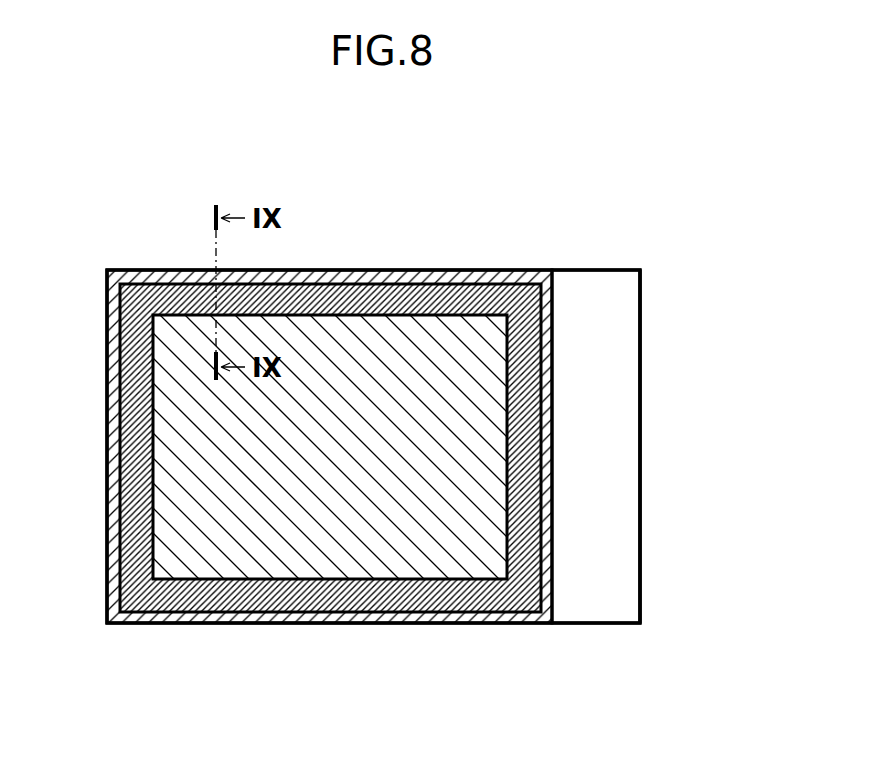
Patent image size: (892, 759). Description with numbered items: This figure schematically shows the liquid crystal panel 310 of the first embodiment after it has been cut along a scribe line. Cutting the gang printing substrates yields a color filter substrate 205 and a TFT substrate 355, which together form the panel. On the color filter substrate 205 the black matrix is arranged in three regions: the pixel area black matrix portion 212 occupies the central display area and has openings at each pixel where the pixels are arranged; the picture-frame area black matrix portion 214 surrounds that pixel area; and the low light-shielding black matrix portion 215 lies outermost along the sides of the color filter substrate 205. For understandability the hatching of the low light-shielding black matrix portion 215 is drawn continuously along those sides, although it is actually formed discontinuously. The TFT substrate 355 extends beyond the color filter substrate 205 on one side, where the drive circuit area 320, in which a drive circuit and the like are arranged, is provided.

The liquid crystal panel 310 is at (457, 152).
The low light-shielding black matrix portion 215 is at (195, 623).
The picture-frame area black matrix portion 214 is at (302, 597).
The pixel area black matrix portion 212 is at (435, 555).
The drive circuit area 320 is at (612, 388).
The TFT substrate 355 is at (640, 485).
The color filter substrate 205 is at (552, 562).